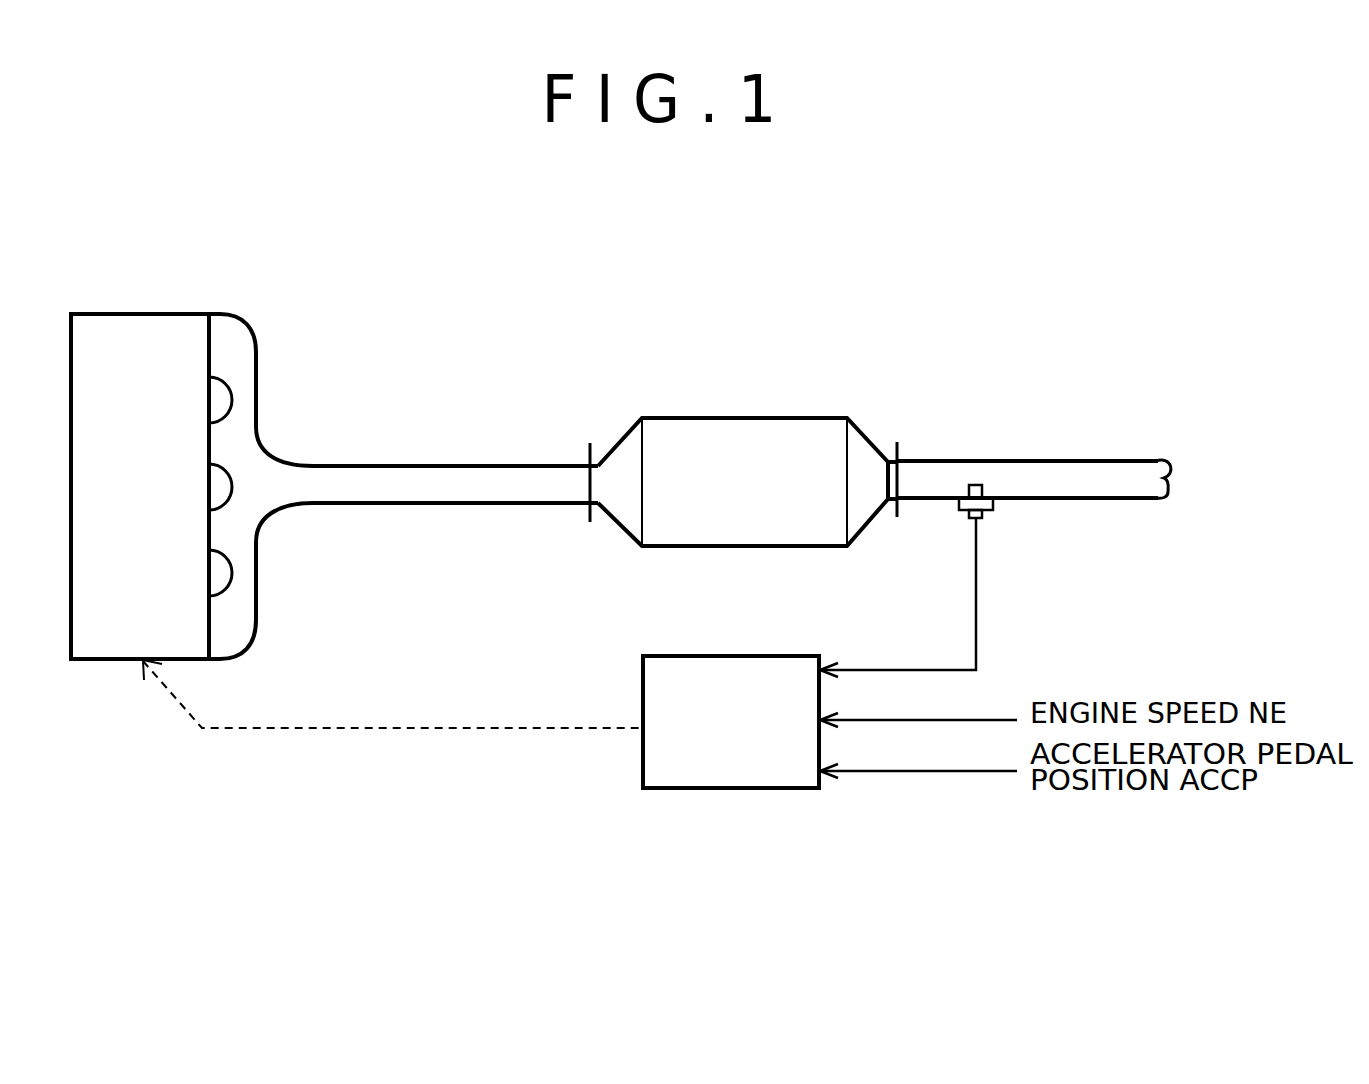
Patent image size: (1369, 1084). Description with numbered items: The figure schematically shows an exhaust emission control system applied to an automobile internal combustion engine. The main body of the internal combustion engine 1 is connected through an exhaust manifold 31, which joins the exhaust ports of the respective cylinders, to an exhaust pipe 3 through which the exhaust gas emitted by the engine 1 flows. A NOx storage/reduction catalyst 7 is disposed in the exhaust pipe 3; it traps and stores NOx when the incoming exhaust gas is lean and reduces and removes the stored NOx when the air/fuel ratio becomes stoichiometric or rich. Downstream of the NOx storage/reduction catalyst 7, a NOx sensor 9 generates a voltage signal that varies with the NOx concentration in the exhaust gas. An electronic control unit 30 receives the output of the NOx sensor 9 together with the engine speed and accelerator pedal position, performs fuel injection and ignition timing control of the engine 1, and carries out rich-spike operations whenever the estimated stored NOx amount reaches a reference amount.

The internal combustion engine 1 is at (158, 508).
The exhaust manifold 31 is at (235, 428).
The exhaust pipe 3 is at (502, 488).
The NOx storage/reduction catalyst 7 is at (728, 498).
The NOx sensor 9 is at (984, 518).
The electronic control unit 30 is at (711, 740).